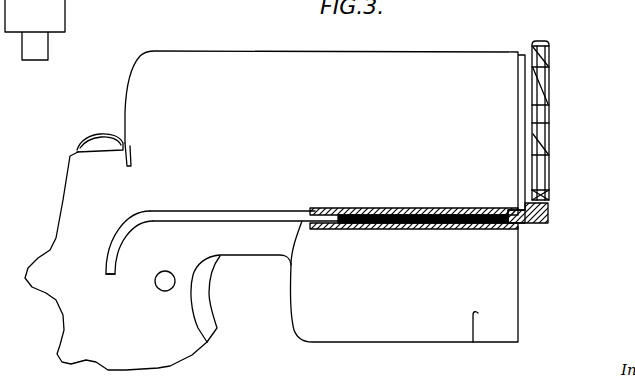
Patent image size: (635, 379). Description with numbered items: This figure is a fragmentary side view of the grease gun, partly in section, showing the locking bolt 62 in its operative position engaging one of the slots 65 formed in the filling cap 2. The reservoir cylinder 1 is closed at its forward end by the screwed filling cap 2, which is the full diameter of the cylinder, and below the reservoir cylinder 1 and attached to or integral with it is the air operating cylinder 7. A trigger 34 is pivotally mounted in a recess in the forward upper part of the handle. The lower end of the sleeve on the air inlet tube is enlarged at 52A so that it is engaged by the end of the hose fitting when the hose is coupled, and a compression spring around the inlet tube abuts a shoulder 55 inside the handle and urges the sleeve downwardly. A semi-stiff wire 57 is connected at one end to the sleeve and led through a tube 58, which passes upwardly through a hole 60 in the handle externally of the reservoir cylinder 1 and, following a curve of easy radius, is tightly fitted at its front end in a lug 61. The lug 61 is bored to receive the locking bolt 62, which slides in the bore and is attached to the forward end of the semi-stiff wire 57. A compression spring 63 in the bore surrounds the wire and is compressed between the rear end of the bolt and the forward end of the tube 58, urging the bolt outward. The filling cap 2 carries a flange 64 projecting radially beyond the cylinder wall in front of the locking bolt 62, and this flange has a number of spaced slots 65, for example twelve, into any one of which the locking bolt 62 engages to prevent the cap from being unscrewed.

The reservoir cylinder 1 is at (376, 68).
The filling cap 2 is at (546, 100).
The air operating cylinder 7 is at (497, 306).
The trigger 34 is at (199, 301).
The enlarged lower end of sleeve 52A is at (48, 5).
The shoulder 55 is at (549, 218).
The semi-stiff wire 57 is at (447, 229).
The tube 58 is at (177, 217).
The hole 60 is at (115, 273).
The lug 61 is at (318, 211).
The locking bolt 62 is at (531, 226).
The compression spring 63 is at (385, 228).
The flange 64 is at (536, 89).
The slots 65 is at (536, 153).